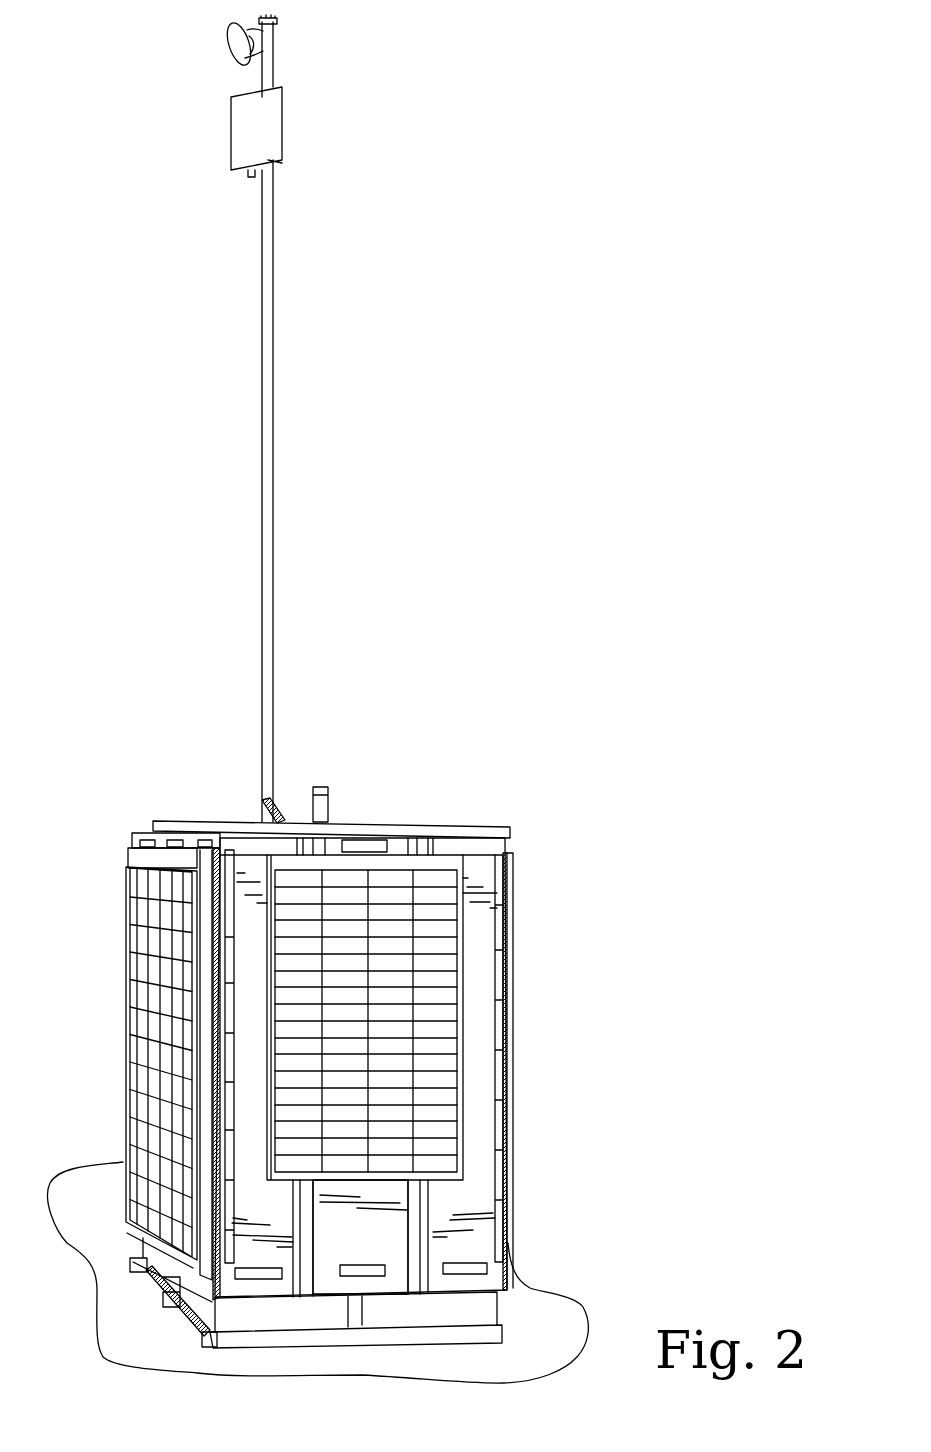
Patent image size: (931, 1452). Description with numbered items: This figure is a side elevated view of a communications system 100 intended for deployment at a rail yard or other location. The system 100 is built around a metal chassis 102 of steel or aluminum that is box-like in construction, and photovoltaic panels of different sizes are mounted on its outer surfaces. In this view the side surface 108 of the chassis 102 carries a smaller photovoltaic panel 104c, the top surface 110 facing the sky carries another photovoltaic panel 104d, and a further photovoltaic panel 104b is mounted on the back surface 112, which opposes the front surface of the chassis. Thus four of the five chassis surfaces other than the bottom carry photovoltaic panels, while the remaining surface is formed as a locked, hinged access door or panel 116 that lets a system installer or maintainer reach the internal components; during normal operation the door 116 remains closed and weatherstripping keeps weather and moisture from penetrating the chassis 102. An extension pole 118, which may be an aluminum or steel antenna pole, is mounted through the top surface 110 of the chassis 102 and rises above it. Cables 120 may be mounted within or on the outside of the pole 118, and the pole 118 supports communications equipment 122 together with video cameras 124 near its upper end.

The communications system 100 is at (478, 822).
The chassis 102 is at (477, 1103).
The photovoltaic panel 104b is at (143, 967).
The photovoltaic panel 104c is at (440, 976).
The photovoltaic panel 104d is at (415, 825).
The side surface 108 is at (378, 1254).
The top surface 110 is at (365, 832).
The back surface 112 is at (145, 858).
The access door or panel 116 is at (200, 1315).
The extension pole 118 is at (273, 467).
The cables 120 is at (283, 812).
The communications equipment 122 is at (283, 118).
The video cameras 124 is at (228, 55).